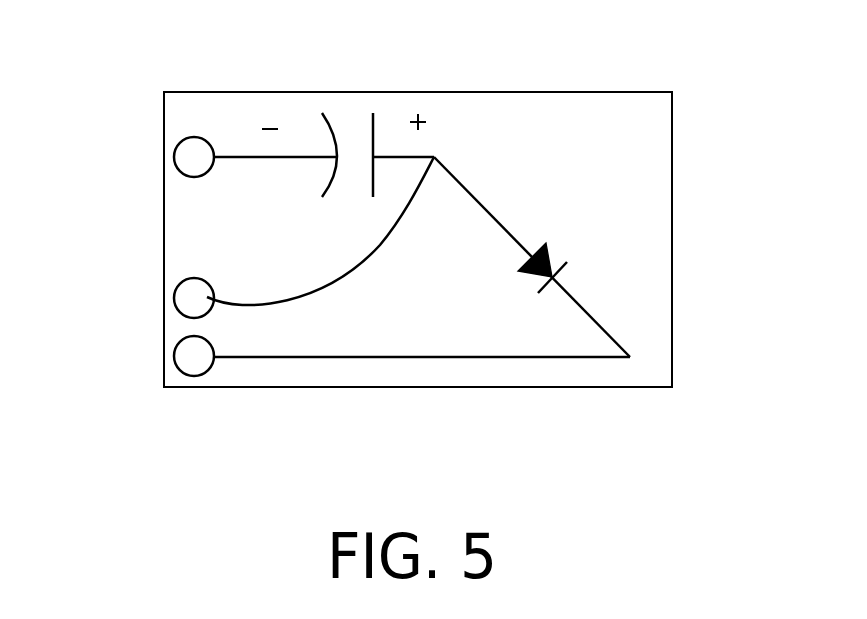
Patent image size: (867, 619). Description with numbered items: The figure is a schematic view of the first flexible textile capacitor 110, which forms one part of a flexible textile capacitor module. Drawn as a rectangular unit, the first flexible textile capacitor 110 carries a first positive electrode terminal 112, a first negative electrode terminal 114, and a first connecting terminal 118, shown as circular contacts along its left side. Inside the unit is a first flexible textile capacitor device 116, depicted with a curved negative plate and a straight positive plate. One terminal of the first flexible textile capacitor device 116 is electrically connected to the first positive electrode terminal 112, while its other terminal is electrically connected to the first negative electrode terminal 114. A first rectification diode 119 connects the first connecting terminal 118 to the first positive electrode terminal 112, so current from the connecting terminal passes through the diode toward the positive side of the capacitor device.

The first flexible textile capacitor 110 is at (766, 439).
The first positive electrode terminal 112 is at (187, 151).
The first negative electrode terminal 114 is at (187, 365).
The first flexible textile capacitor device 116 is at (360, 113).
The first connecting terminal 118 is at (187, 290).
The first rectification diode 119 is at (565, 252).